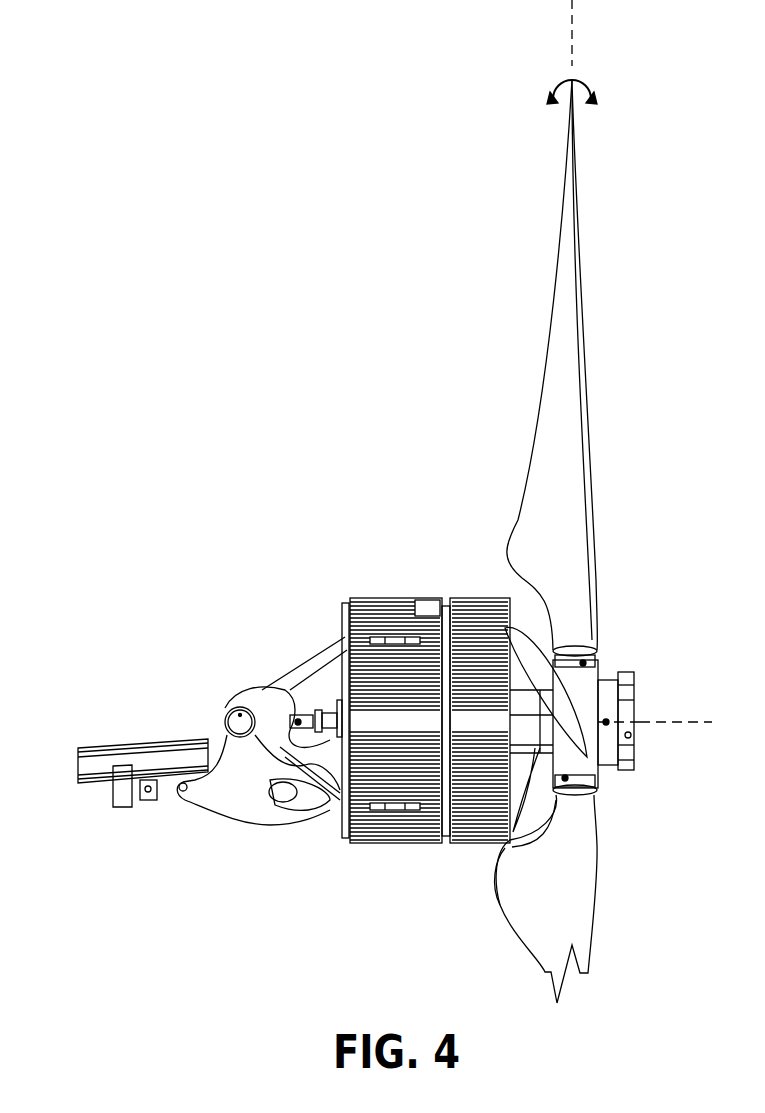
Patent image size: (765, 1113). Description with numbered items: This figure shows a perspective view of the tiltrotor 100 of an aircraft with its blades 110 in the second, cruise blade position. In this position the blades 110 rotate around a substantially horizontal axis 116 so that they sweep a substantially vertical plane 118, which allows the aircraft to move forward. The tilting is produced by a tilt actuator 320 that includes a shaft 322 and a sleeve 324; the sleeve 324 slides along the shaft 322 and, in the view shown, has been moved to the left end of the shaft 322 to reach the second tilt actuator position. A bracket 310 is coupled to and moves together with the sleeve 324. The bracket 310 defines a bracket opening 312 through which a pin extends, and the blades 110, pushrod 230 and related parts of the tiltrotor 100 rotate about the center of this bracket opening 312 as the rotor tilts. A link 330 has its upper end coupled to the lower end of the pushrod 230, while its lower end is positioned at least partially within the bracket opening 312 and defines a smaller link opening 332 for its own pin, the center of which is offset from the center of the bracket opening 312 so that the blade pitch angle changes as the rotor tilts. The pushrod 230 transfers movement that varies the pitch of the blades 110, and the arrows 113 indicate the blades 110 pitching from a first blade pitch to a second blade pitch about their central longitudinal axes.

The tiltrotor 100 is at (93, 146).
The blades 110 is at (579, 393).
The arrows 113 is at (590, 82).
The substantially horizontal axis 116 is at (690, 722).
The substantially vertical plane 118 is at (575, 29).
The pushrod 230 is at (330, 707).
The bracket 310 is at (220, 823).
The bracket opening 312 is at (228, 722).
The tilt actuator 320 is at (85, 717).
The shaft 322 is at (290, 797).
The sleeve 324 is at (168, 800).
The link 330 is at (272, 690).
The link opening 332 is at (235, 702).